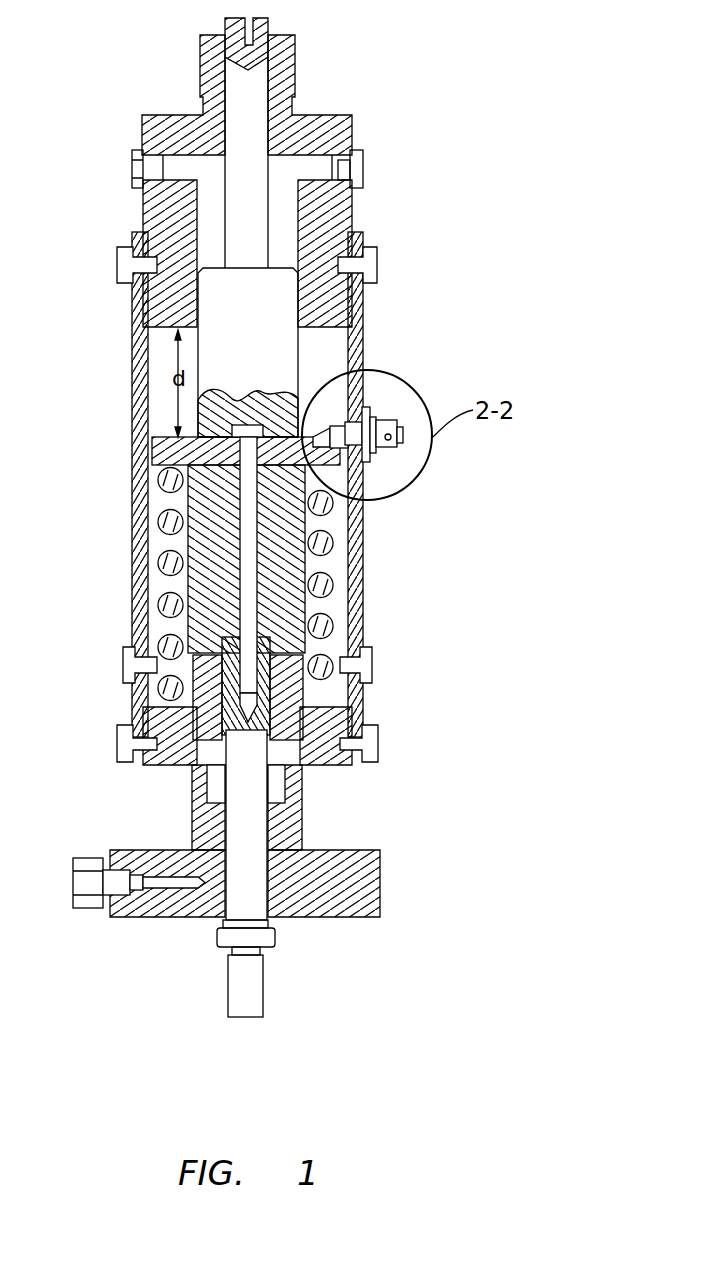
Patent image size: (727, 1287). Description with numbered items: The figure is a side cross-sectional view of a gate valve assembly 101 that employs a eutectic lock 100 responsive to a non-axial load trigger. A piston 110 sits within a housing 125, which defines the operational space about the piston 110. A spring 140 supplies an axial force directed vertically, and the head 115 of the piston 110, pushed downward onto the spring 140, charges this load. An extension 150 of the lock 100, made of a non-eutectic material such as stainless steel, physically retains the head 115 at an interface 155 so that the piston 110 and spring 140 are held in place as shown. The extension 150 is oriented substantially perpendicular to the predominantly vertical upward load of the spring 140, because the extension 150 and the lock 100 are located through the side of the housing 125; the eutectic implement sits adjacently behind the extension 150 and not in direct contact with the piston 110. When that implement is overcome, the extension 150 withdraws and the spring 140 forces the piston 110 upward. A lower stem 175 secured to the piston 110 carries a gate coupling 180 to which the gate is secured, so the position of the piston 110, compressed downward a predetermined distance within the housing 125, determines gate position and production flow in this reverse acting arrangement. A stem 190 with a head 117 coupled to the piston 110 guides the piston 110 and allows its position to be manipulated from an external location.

The gate valve assembly 101 is at (470, 70).
The stem 190 is at (237, 105).
The housing 125 is at (140, 392).
The head 117 is at (267, 334).
The head 115 is at (173, 437).
The piston 110 is at (233, 497).
The spring 140 is at (340, 519).
The interface 155 is at (315, 427).
The extension 150 is at (323, 433).
The eutectic lock 100 is at (385, 407).
The lower stem 175 is at (237, 831).
The gate coupling 180 is at (253, 994).